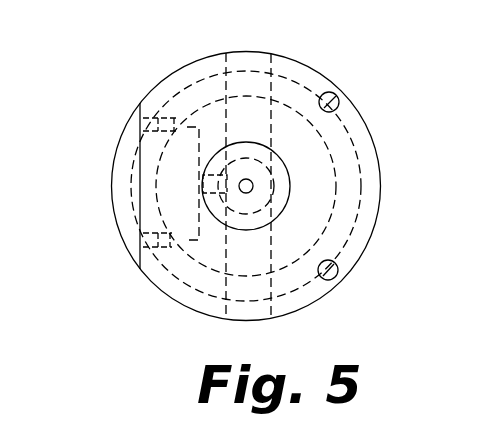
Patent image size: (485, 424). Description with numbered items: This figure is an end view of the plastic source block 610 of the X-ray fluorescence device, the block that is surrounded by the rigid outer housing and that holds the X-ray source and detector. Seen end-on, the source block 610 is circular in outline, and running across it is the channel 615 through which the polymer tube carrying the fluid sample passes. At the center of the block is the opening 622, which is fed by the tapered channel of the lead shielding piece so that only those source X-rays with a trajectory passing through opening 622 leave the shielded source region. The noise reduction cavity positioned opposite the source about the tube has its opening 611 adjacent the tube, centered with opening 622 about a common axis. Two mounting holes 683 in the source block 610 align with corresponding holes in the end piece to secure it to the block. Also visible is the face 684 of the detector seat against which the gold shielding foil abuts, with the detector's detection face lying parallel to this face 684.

The source block 610 is at (117, 50).
The opening 611 is at (262, 154).
The channel 615 is at (225, 108).
The opening 622 is at (253, 190).
The mounting hole 683 is at (340, 95).
The face 684 is at (203, 203).